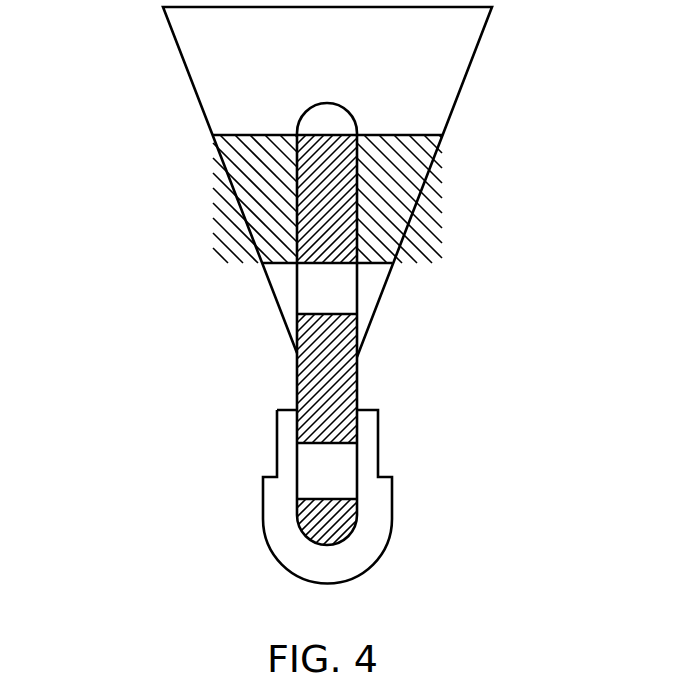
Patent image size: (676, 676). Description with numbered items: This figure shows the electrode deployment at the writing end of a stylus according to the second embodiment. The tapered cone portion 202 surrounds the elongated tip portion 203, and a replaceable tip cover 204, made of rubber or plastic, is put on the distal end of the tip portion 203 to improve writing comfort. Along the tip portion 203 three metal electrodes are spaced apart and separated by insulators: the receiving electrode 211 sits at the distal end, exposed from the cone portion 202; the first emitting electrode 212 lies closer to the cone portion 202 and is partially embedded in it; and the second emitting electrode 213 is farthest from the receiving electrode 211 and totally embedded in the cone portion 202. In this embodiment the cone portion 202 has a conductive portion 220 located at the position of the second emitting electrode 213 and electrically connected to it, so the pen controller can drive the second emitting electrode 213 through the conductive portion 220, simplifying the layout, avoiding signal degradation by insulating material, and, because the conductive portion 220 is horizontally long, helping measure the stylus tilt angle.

The cone portion 202 is at (188, 72).
The tip portion 203 is at (297, 292).
The tip cover 204 is at (263, 529).
The receiving (RX) electrode 211 is at (340, 525).
The first emitting (TX1) electrode 212 is at (343, 393).
The second emitting (TX2) electrode 213 is at (338, 205).
The conductive portion 220 is at (393, 233).